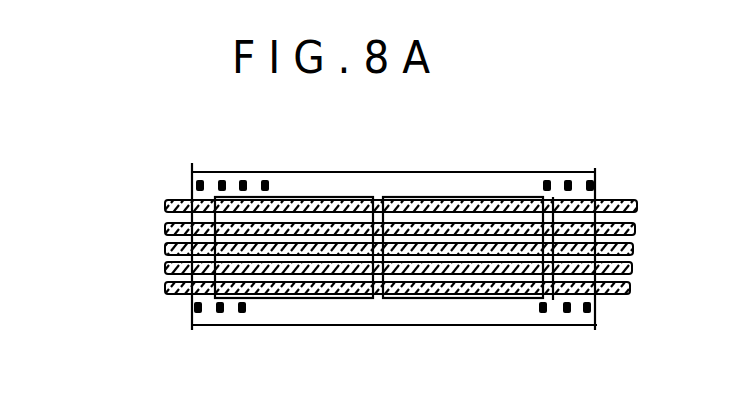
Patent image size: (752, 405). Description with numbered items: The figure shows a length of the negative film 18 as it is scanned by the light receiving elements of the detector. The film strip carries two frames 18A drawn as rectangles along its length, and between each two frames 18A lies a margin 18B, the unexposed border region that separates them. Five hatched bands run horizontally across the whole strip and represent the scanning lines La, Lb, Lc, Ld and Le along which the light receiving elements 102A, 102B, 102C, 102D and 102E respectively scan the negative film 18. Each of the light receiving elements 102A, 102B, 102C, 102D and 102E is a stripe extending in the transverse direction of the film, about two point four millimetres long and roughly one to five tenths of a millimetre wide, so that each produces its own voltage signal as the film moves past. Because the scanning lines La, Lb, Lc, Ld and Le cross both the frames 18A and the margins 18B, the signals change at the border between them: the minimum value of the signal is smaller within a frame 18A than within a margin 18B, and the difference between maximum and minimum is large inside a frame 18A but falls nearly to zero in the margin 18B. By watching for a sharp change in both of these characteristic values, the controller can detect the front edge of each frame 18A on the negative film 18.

The negative film 18 is at (340, 170).
The frame 18A is at (262, 300).
The margin 18B is at (377, 300).
The light receiving element 102A is at (123, 213).
The light receiving element 102B is at (123, 234).
The light receiving element 102C is at (123, 243).
The light receiving element 102D is at (123, 263).
The light receiving element 102E is at (123, 282).
The scanning line La is at (637, 206).
The scanning line Lb is at (635, 229).
The scanning line Lc is at (633, 249).
The scanning line Ld is at (632, 268).
The scanning line Le is at (630, 288).